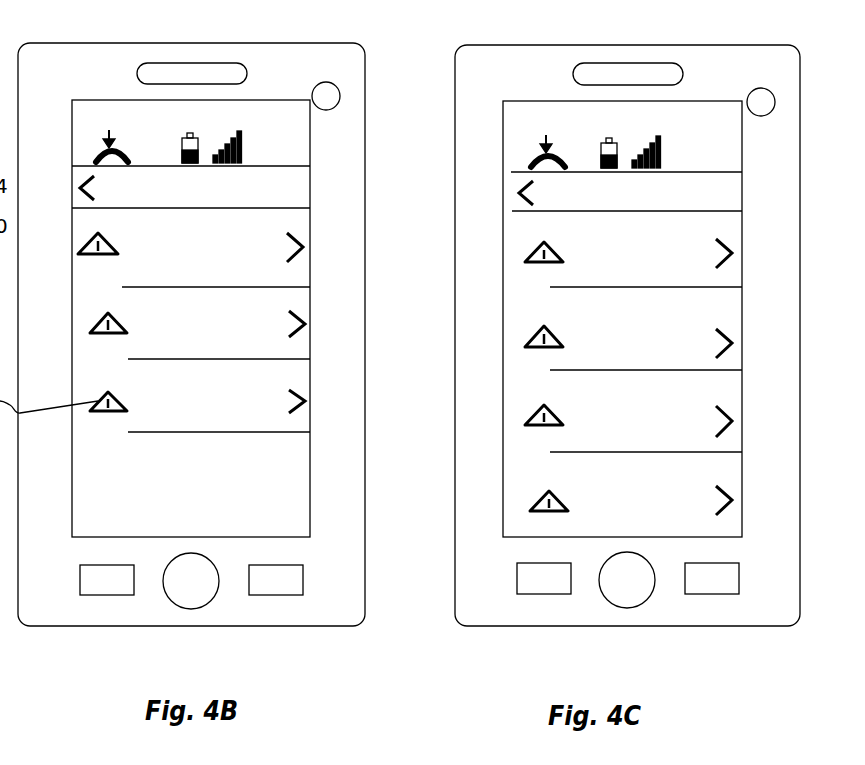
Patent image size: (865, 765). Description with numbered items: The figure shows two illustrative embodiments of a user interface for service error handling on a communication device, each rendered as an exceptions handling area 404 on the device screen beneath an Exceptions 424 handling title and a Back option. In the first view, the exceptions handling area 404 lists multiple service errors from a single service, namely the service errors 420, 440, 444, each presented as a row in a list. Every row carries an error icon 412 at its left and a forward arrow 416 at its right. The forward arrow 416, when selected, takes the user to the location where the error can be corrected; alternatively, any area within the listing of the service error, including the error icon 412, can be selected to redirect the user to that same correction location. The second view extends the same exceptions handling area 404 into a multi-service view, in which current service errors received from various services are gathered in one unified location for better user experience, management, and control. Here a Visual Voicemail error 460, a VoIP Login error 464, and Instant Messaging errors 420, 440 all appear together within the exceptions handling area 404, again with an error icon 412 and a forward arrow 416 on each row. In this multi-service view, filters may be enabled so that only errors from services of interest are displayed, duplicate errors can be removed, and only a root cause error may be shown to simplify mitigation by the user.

In FIG. 4B, the exceptions handling area 404 is at (194, 44).
In FIG. 4C, the exceptions handling area 404 is at (628, 45).
In FIG. 4B, the Exceptions handling title 424 is at (270, 187).
In FIG. 4C, the Exceptions handling title 424 is at (712, 192).
In FIG. 4B, the service error 420 is at (285, 224).
In FIG. 4C, the service error 420 is at (728, 394).
In FIG. 4B, the service error 440 is at (310, 299).
In FIG. 4C, the service error 440 is at (730, 476).
In FIG. 4B, the service error 444 is at (258, 373).
In FIG. 4B, the forward arrow 416 is at (305, 411).
In FIG. 4C, the Visual Voicemail error 460 is at (708, 229).
In FIG. 4C, the VoIP Login error 464 is at (720, 311).
In FIG. 4C, the error icon 412 is at (538, 504).